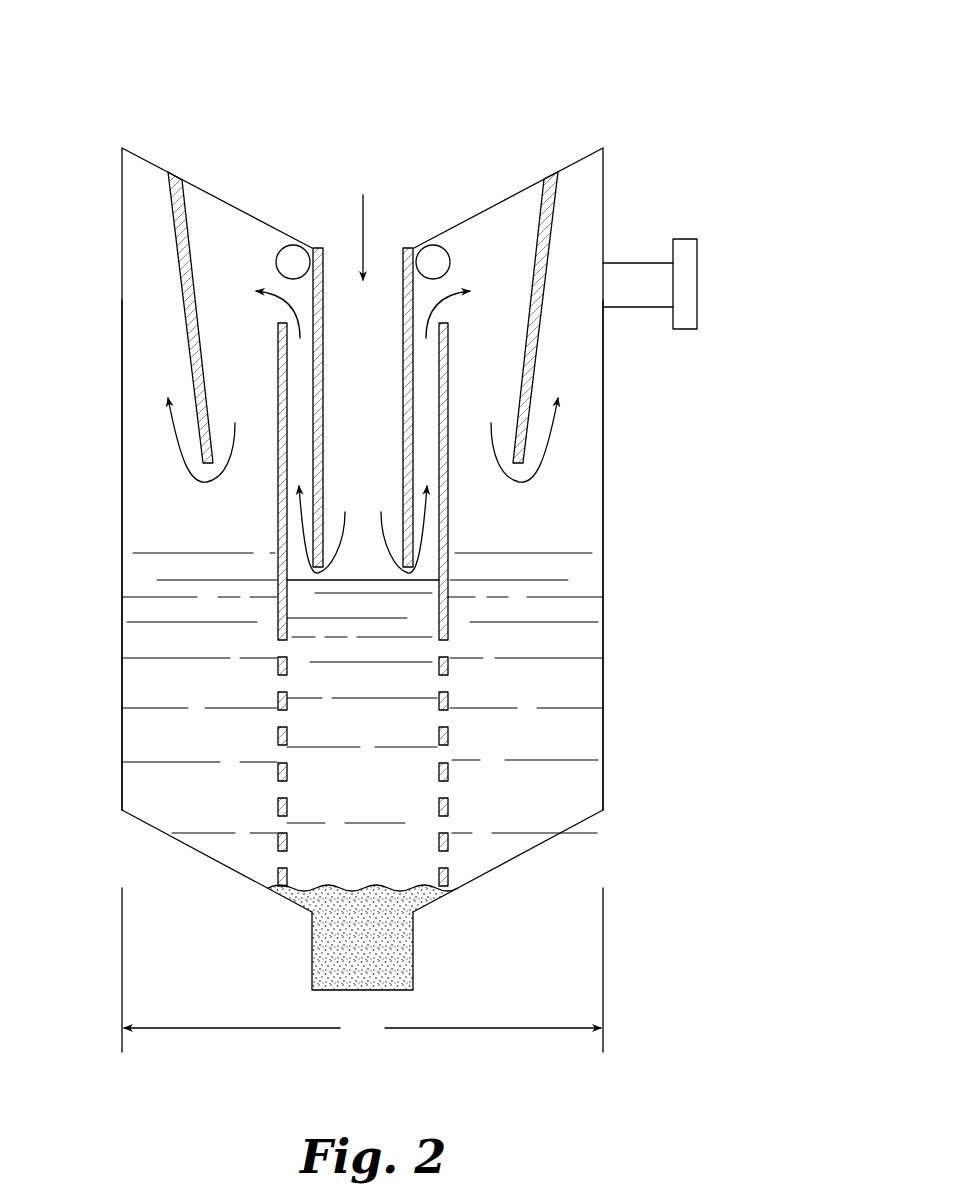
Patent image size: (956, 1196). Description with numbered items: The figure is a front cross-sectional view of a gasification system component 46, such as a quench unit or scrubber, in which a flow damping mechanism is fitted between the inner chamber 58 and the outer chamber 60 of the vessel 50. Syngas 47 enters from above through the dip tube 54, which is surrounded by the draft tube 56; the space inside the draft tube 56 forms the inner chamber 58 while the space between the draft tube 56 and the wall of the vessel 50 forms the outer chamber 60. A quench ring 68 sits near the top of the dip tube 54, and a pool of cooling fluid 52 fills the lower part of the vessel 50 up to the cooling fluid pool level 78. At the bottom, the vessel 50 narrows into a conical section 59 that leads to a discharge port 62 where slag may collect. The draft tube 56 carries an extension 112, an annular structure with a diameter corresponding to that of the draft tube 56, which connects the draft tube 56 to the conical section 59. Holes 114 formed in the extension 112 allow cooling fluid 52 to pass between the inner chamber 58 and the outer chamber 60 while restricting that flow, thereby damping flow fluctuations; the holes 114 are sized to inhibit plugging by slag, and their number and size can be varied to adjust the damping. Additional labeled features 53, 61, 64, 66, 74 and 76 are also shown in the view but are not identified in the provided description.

The gasification system component 46 is at (616, 106).
The syngas 47 is at (363, 208).
The vessel 50 is at (603, 347).
The cooling fluid 52 is at (132, 682).
The roller / deflector 53 is at (343, 280).
The dip tube 54 is at (323, 413).
The draft tube 56 is at (277, 485).
The inner chamber 58 is at (418, 386).
The conical section 59 is at (523, 855).
The outer chamber 60 is at (582, 390).
The collected particulate bed 61 is at (323, 937).
The discharge port 62 is at (413, 940).
The inclined deflector plate 64 is at (556, 190).
The outlet port 66 is at (673, 239).
The quench ring 68 is at (447, 248).
The housing width 74 is at (362, 970).
The liquid 76 is at (558, 545).
The cooling fluid pool level 78 is at (358, 580).
The extension 112 is at (450, 667).
The holes 114 is at (447, 718).